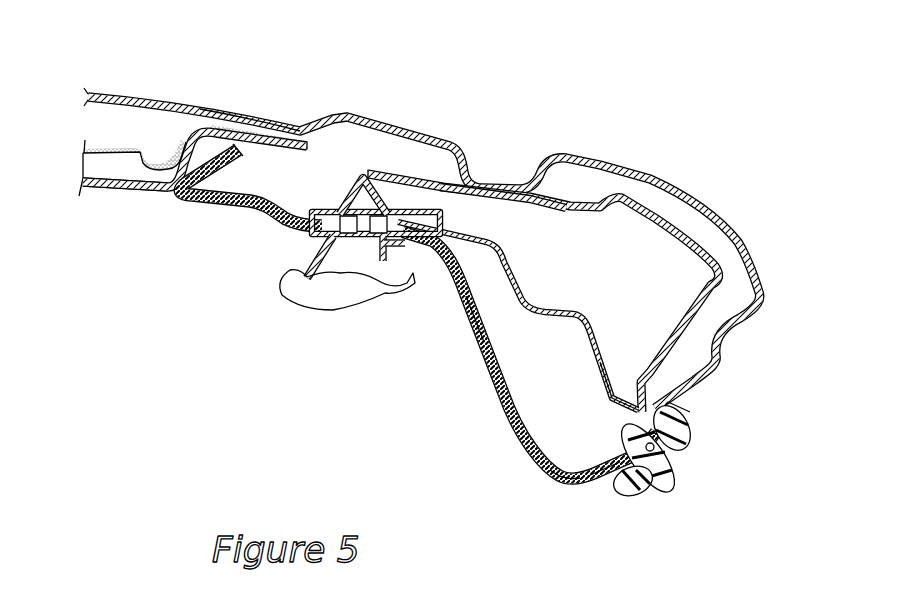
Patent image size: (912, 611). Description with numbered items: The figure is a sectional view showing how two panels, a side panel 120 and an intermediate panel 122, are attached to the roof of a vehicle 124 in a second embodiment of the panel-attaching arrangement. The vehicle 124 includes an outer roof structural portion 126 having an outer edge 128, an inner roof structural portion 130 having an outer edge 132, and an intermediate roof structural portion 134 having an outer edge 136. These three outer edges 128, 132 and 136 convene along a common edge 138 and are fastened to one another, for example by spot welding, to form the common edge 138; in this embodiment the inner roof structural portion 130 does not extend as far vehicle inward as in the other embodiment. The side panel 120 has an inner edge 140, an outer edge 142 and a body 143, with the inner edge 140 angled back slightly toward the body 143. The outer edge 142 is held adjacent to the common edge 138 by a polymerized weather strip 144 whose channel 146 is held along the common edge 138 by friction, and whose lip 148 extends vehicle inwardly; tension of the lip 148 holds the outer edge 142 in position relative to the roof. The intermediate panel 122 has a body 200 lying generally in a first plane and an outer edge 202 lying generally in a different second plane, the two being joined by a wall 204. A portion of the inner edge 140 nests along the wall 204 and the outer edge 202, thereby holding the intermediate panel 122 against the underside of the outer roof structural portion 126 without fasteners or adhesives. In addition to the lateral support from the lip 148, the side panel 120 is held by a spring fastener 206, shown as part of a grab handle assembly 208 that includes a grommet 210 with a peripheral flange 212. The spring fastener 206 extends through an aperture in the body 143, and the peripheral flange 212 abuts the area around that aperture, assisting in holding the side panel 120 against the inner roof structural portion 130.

The side panel 120 is at (500, 440).
The intermediate panel 122 is at (117, 186).
The vehicle 124 is at (494, 152).
The outer roof structural portion 126 is at (740, 243).
The outer edge of outer roof structural portion 128 is at (703, 474).
The inner roof structural portion 130 is at (653, 218).
The outer edge of inner roof structural portion 132 is at (693, 410).
The intermediate roof structural portion 134 is at (553, 311).
The outer edge of intermediate roof structural portion 136 is at (633, 425).
The common edge 138 is at (690, 447).
The inner edge of side panel 140 is at (180, 200).
The outer edge of side panel 142 is at (568, 482).
The body of side panel 143 is at (470, 345).
The weather strip 144 is at (640, 492).
The channel 146 is at (593, 468).
The lip 148 is at (623, 487).
The body of intermediate panel 200 is at (88, 184).
The outer edge of intermediate panel 202 is at (222, 117).
The wall 204 is at (180, 147).
The spring fastener 206 is at (362, 178).
The grab handle assembly 208 is at (297, 300).
The grommet 210 is at (317, 240).
The peripheral flange 212 is at (403, 247).